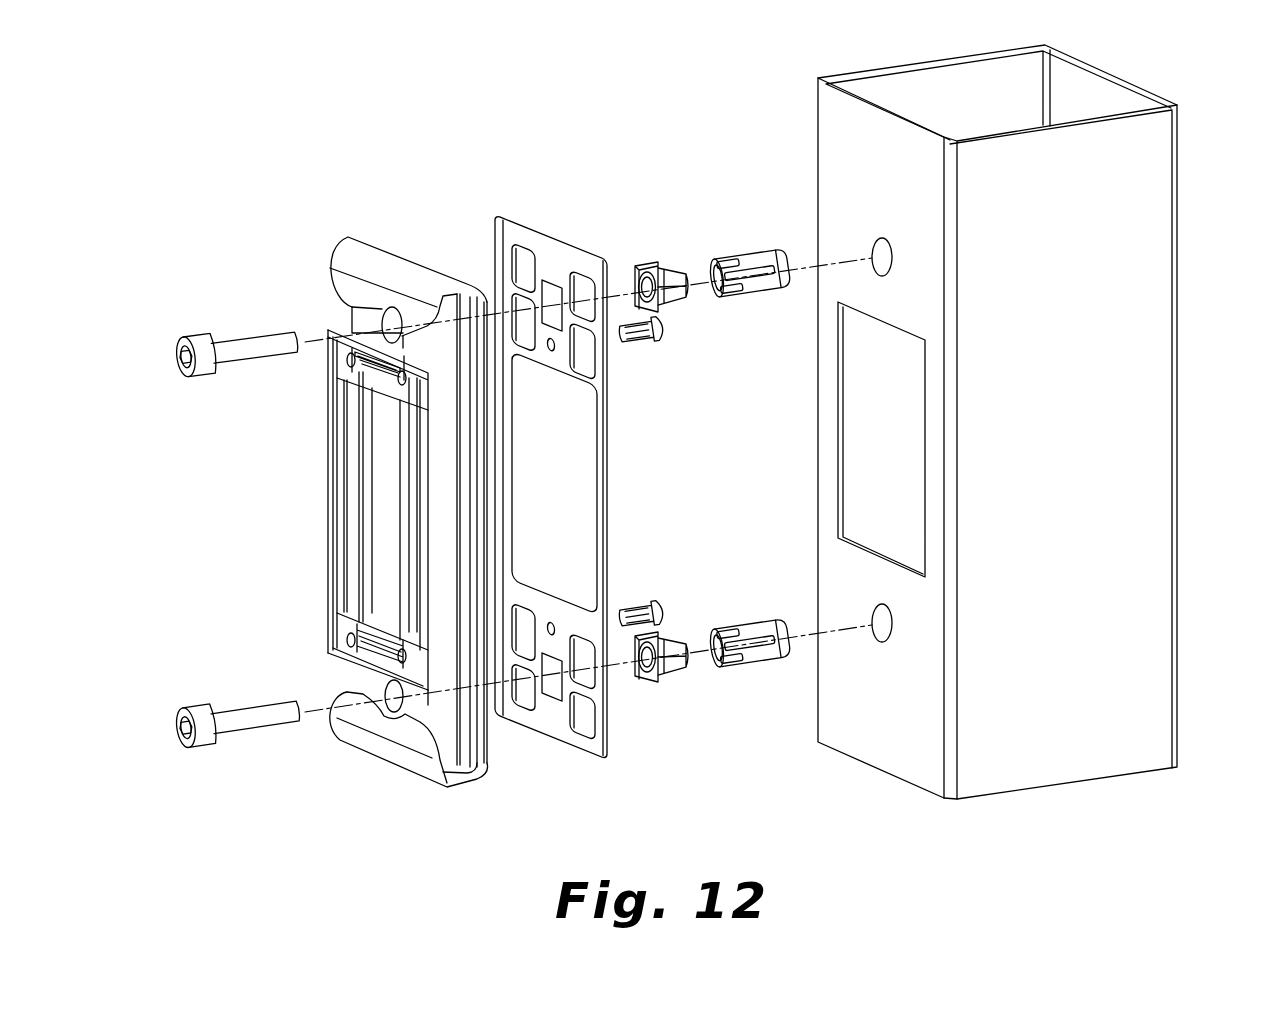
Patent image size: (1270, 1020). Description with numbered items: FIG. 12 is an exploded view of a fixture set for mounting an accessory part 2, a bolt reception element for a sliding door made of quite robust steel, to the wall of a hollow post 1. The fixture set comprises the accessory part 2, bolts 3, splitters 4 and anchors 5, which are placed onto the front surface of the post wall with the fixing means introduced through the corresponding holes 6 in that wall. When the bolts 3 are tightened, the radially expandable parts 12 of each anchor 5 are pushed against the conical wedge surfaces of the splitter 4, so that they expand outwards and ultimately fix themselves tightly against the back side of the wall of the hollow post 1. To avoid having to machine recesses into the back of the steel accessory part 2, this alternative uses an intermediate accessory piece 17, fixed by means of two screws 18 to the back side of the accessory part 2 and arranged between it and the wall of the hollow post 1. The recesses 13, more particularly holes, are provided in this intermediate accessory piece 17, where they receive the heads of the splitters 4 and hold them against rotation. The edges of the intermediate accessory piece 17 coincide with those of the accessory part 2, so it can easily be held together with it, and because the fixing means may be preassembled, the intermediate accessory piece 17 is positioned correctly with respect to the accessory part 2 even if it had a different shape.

The hollow post 1 is at (1160, 230).
The accessory part 2 is at (388, 272).
The bolt 3 is at (270, 345).
The splitter 4 is at (649, 268).
The anchor 5 is at (773, 286).
The hole 6 is at (870, 246).
The radially expandable part 12 is at (747, 272).
The recess 13 is at (551, 288).
The intermediate accessory piece 17 is at (593, 378).
The screw 18 is at (643, 339).